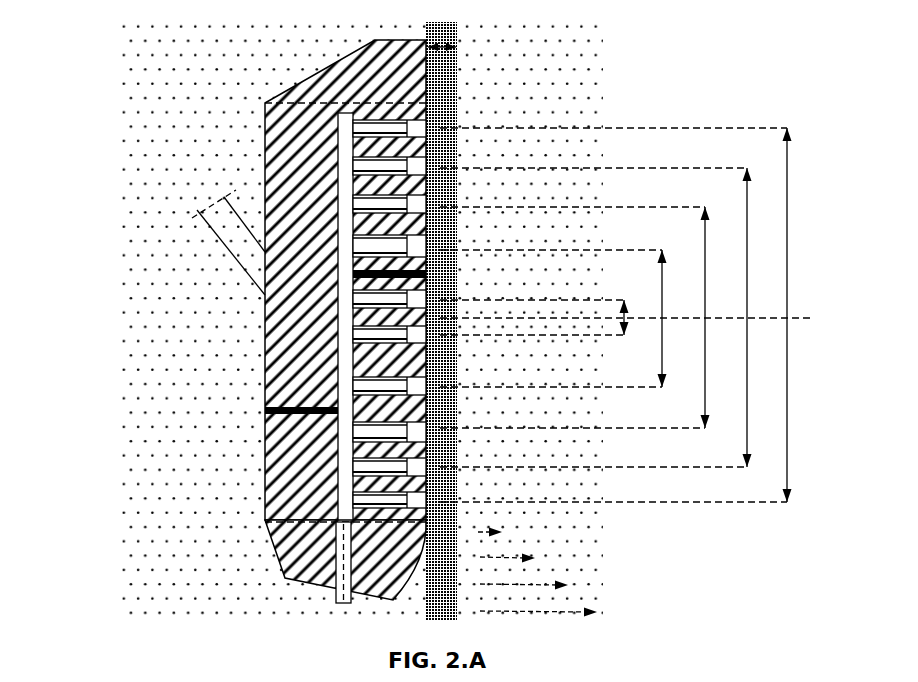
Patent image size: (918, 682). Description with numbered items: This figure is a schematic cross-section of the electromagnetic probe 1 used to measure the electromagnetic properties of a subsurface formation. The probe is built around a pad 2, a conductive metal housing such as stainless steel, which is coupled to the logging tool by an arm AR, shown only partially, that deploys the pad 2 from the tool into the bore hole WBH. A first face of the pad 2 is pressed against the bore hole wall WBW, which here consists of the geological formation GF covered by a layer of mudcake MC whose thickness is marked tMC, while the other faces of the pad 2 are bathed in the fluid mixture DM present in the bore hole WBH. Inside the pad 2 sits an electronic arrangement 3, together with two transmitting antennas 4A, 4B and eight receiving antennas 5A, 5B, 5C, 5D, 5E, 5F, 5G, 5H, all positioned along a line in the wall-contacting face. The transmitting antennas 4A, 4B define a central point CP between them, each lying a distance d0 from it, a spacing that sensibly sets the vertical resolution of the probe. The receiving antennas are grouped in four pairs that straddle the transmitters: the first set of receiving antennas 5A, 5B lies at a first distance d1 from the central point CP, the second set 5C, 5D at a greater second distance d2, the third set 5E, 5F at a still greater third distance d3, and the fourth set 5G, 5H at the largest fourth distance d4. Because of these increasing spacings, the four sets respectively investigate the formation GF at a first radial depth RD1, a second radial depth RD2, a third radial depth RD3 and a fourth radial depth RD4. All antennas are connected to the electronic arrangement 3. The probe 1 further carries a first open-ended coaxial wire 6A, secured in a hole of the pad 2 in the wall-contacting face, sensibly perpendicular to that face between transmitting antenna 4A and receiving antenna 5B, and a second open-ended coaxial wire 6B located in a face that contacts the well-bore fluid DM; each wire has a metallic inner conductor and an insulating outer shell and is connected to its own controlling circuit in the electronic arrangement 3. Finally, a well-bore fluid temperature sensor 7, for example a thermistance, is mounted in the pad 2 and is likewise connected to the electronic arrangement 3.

The electromagnetic probe 1 is at (175, 93).
The pad 2 is at (262, 549).
The electronic arrangement 3 is at (325, 197).
The transmitting antenna 4A is at (395, 305).
The transmitting antenna 4B is at (393, 338).
The first receiving antenna 5A is at (395, 385).
The second receiving antenna 5B is at (395, 243).
The third receiving antenna 5C is at (395, 430).
The fourth receiving antenna 5D is at (395, 203).
The fifth receiving antenna 5E is at (395, 473).
The sixth receiving antenna 5F is at (395, 164).
The seventh receiving antenna 5G is at (395, 500).
The eighth receiving antenna 5H is at (395, 127).
The first open-ended coaxial wire 6A is at (442, 275).
The second open-ended coaxial wire 6B is at (254, 410).
The temperature sensor 7 is at (324, 570).
The arm AR is at (220, 258).
The bore hole WBH is at (147, 43).
The bore hole wall WBW is at (442, 480).
The mudcake MC is at (462, 88).
The mudcake thickness tMC is at (446, 34).
The fluid mixture DM is at (164, 612).
The geological formation GF is at (606, 594).
The central point CP is at (641, 320).
The distance d0 is at (545, 319).
The first distance d1 is at (563, 318).
The second distance d2 is at (585, 317).
The third distance d3 is at (605, 317).
The fourth distance d4 is at (626, 315).
The first radial depth RD1 is at (470, 524).
The second radial depth RD2 is at (486, 549).
The third radial depth RD3 is at (503, 576).
The fourth radial depth RD4 is at (517, 603).